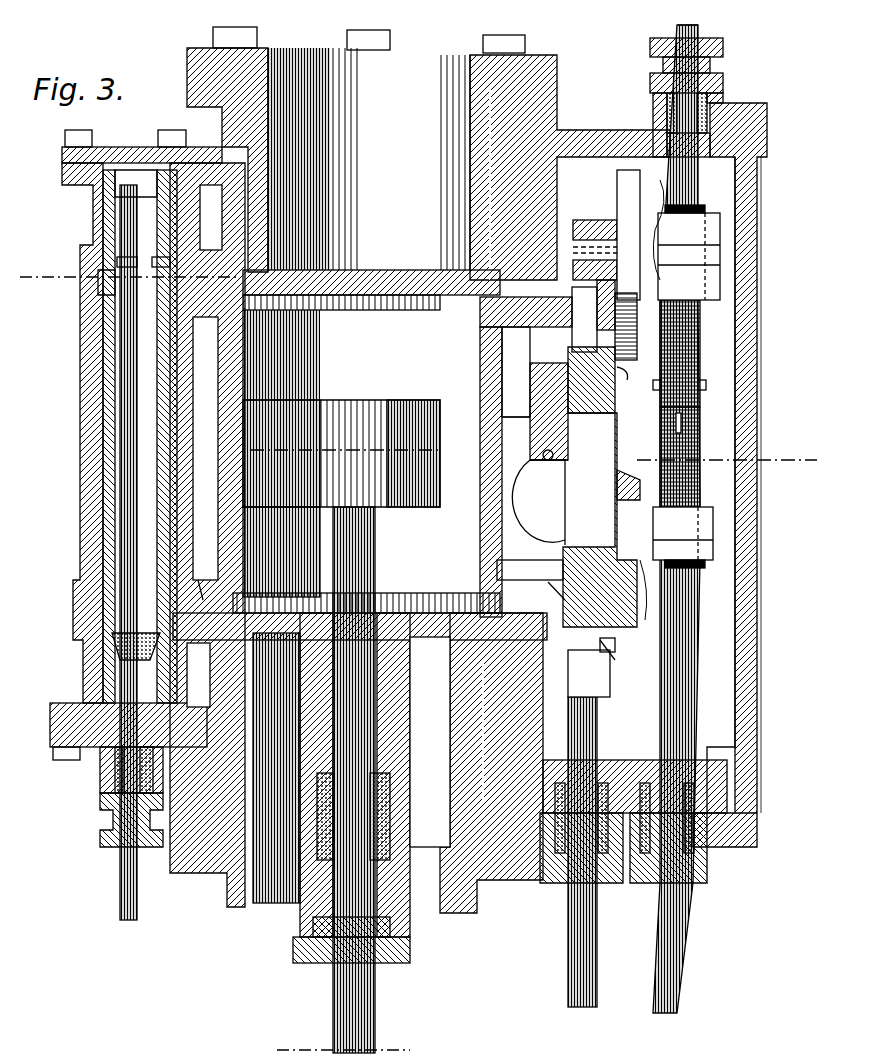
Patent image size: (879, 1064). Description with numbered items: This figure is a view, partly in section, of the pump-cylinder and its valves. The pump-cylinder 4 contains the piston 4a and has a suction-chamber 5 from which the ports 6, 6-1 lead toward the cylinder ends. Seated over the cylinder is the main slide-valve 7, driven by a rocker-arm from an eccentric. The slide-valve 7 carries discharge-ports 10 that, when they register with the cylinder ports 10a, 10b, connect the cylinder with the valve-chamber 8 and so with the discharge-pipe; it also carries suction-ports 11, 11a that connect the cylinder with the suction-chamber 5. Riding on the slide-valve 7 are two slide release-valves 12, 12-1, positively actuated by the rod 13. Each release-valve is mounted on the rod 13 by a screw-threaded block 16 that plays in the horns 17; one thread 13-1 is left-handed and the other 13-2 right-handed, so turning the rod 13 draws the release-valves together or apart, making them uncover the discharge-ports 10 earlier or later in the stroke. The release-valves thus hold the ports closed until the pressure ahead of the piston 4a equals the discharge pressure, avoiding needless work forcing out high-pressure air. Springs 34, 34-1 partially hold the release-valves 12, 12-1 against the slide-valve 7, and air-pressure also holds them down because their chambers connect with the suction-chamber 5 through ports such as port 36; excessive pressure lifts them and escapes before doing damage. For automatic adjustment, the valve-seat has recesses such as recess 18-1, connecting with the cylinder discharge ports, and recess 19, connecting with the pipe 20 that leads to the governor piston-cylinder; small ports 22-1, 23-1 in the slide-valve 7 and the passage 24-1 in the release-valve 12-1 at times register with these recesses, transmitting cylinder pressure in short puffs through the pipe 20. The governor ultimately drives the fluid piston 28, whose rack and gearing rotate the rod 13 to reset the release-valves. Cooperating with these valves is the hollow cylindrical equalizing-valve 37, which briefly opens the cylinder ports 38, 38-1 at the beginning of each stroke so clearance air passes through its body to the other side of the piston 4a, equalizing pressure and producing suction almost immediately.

The pump-cylinder 4 is at (266, 52).
The piston 4a is at (386, 401).
The suction-chamber 5 is at (470, 545).
The port 6 is at (516, 372).
The port 6-1 is at (470, 562).
The main slide-valve 7 is at (618, 428).
The valve-chamber 8 is at (710, 648).
The discharge-port 10 is at (613, 170).
The port 10a is at (540, 357).
The port 10b is at (530, 572).
The suction-port 11 is at (608, 258).
The suction-port 11a is at (554, 584).
The slide release-valve 12 is at (636, 326).
The slide release-valve 12-1 is at (622, 658).
The rod 13 is at (692, 28).
The left-handed screw-thread 13-1 is at (690, 353).
The right-handed screw-thread 13-2 is at (690, 458).
The screw-threaded block 16 is at (705, 298).
The horn 17 is at (710, 228).
The recess 18-1 is at (589, 673).
The recess 19 is at (540, 510).
The pipe 20 is at (545, 452).
The small port 22-1 is at (608, 665).
The small port 23-1 is at (603, 520).
The passage 24-1 is at (625, 640).
The piston 28 is at (584, 319).
The spring 34 is at (650, 205).
The spring 34-1 is at (652, 590).
The port 36 is at (629, 383).
The equalizing-valve 37 is at (125, 525).
The port 38 is at (207, 535).
The port 38-1 is at (207, 579).